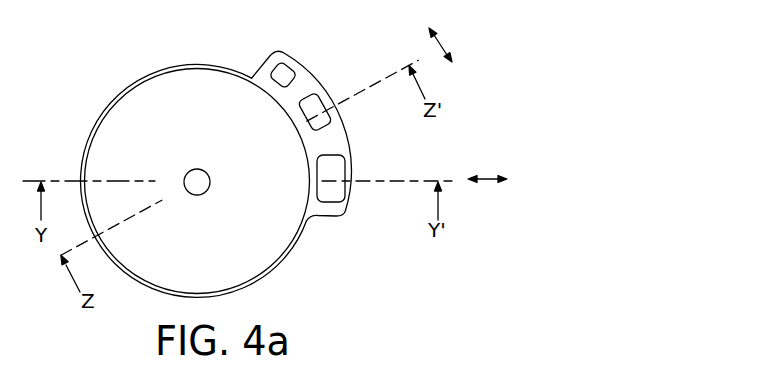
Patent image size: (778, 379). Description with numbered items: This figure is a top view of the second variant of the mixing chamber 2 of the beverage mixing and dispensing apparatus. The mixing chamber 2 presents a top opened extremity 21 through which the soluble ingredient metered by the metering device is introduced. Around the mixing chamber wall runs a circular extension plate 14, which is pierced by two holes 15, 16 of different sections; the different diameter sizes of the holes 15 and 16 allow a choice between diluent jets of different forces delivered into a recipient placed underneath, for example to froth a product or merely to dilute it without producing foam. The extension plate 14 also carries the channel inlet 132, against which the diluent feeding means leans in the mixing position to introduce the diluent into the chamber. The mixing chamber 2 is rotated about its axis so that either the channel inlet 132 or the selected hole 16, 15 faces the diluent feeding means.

The mixing chamber 2 is at (198, 64).
The top opened extremity 21 is at (110, 124).
The extension plate 14 is at (338, 140).
The hole 15 is at (284, 72).
The hole 16 is at (312, 102).
The channel inlet 132 is at (340, 197).